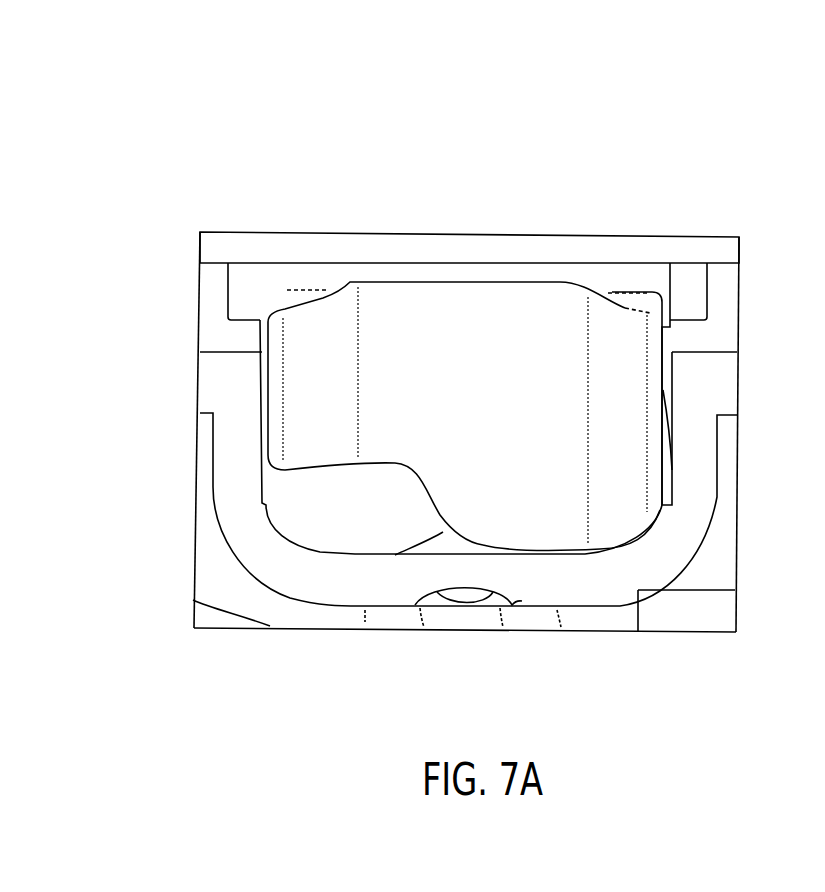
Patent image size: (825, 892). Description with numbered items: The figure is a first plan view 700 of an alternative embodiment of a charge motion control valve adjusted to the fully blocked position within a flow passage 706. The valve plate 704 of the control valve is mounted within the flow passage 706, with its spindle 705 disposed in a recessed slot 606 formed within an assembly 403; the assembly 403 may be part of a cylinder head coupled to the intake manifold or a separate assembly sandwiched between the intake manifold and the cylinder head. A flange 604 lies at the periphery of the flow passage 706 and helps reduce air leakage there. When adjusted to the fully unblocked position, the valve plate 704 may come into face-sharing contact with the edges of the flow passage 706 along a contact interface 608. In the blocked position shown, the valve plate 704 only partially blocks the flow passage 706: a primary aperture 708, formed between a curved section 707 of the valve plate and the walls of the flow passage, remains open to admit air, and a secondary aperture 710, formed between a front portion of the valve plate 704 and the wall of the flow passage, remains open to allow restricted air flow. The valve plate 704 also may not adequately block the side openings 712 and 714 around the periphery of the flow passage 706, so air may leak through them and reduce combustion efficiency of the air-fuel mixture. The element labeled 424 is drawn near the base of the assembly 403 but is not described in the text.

The first plan view 700 is at (240, 145).
The flange 604 is at (343, 253).
The spindle 705 is at (240, 283).
The recessed slot 606 is at (217, 293).
The contact interface 608 is at (265, 365).
The valve plate 704 is at (490, 297).
The curved section 707 is at (385, 465).
The side opening 712 is at (262, 437).
The side opening 714 is at (672, 468).
The assembly 403 is at (218, 562).
The primary aperture 708 is at (318, 510).
The flow passage 706 is at (395, 536).
The protrusion 424 is at (452, 618).
The secondary aperture 710 is at (557, 553).